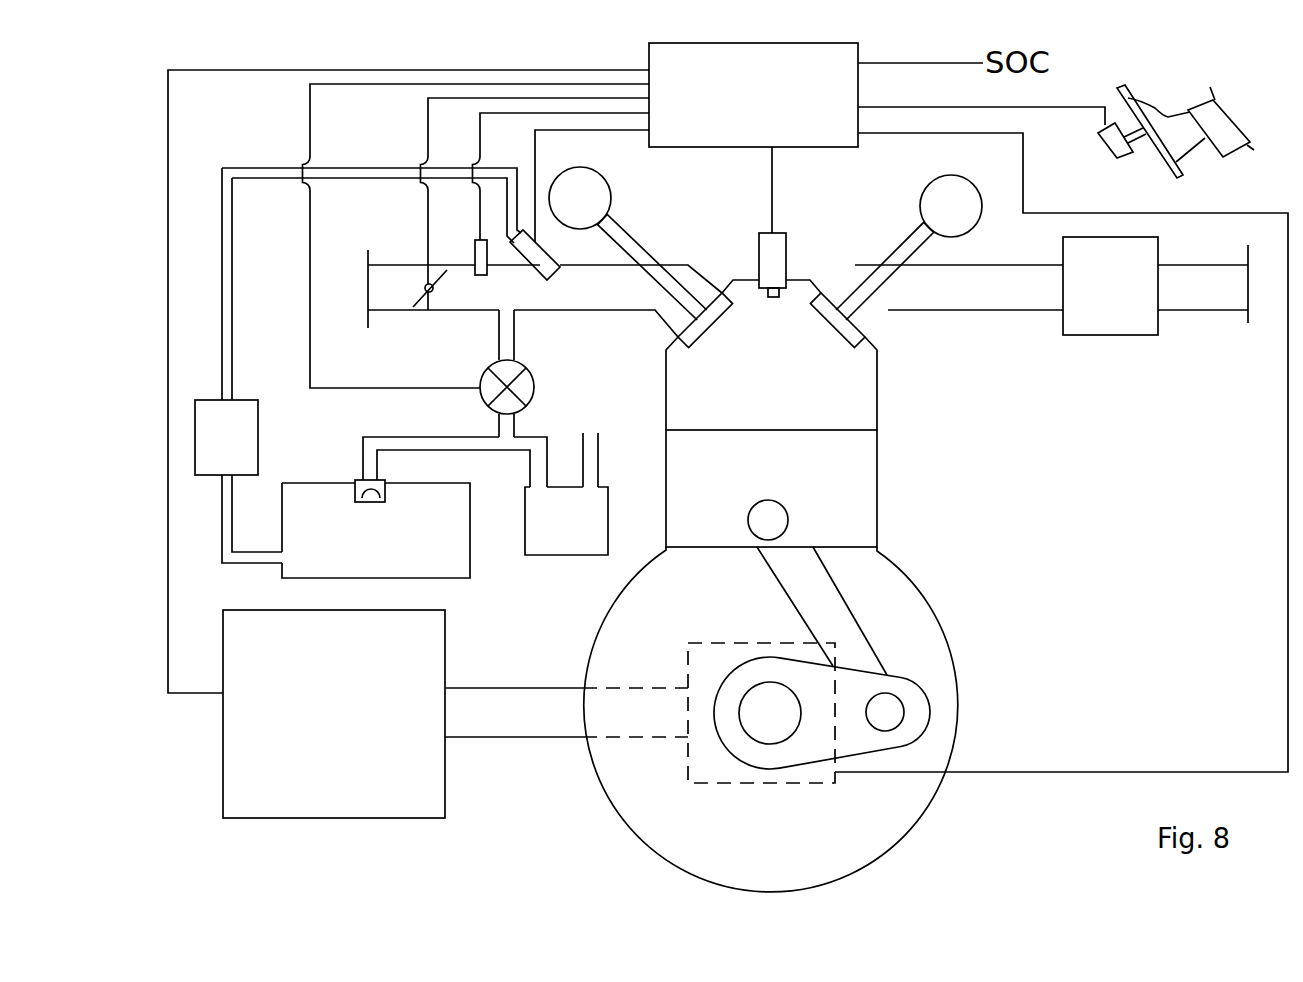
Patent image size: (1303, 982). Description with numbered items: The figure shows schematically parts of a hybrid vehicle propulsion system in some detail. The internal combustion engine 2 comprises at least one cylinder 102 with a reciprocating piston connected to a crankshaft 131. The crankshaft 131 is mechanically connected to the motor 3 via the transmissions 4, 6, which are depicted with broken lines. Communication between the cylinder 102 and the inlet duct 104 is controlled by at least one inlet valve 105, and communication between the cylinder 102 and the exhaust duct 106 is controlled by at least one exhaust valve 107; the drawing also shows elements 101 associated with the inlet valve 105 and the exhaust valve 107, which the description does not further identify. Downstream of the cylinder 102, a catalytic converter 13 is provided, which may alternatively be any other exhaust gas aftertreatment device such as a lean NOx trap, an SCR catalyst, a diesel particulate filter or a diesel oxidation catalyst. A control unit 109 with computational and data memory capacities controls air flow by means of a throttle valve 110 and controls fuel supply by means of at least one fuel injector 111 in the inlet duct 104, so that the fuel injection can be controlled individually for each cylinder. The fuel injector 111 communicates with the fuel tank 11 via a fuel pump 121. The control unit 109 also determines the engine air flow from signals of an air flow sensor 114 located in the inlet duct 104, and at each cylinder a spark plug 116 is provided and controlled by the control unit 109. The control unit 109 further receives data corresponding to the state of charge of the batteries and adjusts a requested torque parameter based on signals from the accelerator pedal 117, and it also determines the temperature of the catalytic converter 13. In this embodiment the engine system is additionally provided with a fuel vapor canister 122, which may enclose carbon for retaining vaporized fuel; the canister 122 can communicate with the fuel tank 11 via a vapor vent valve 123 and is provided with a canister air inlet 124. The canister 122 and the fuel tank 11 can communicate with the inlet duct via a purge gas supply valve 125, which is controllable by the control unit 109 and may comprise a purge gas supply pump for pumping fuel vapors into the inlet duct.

The internal combustion engine 2 is at (937, 497).
The motor 3 is at (779, 486).
The transmission 4 is at (761, 745).
The transmission 6 is at (733, 783).
The fuel tank 11 is at (383, 549).
The catalytic converter 13 is at (1125, 302).
The electromagnetic valve actuator 101 is at (602, 210).
The cylinder 102 is at (792, 419).
The inlet duct 104 is at (623, 304).
The inlet valve 105 is at (705, 345).
The exhaust duct 106 is at (985, 302).
The exhaust valve 107 is at (853, 345).
The control unit 109 is at (772, 109).
The throttle valve 110 is at (428, 310).
The fuel injector 111 is at (538, 279).
The air flow sensor 114 is at (476, 248).
The spark plug 116 is at (786, 248).
The accelerator pedal 117 is at (1162, 155).
The fuel pump 121 is at (248, 454).
The fuel vapor canister 122 is at (590, 536).
The vapor vent valve 123 is at (355, 481).
The canister air inlet 124 is at (618, 431).
The purge gas supply valve 125 is at (534, 389).
The crankshaft 131 is at (757, 688).